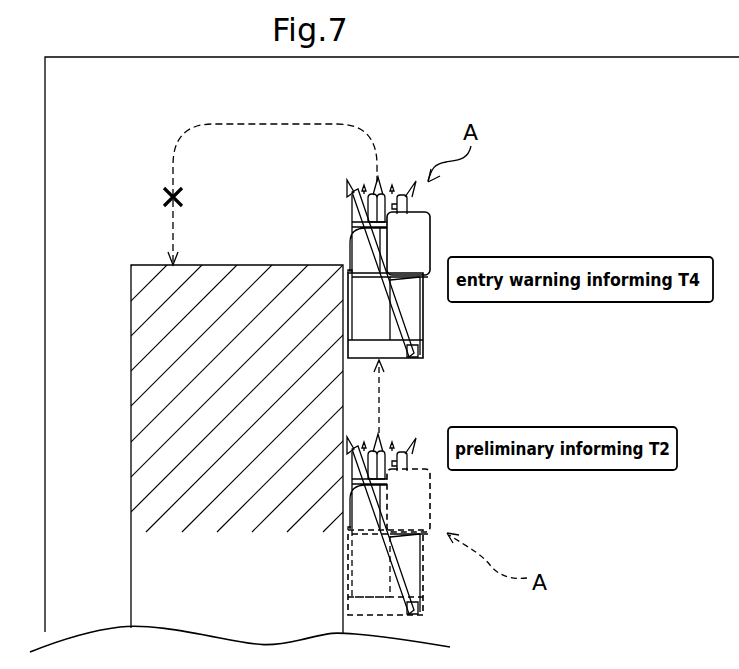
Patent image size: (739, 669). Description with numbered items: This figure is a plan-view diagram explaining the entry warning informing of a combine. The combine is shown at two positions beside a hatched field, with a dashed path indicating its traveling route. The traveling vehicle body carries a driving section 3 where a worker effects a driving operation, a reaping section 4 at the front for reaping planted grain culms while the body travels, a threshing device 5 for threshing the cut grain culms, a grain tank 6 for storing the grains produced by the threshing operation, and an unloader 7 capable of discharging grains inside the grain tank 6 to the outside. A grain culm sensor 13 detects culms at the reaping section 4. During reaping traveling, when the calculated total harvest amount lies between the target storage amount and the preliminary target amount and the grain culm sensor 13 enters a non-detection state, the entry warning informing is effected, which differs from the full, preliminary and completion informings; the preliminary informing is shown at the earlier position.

The driving section 3 is at (420, 228).
The reaping section 4 is at (381, 180).
The threshing device 5 is at (368, 335).
The grain tank 6 is at (412, 305).
The unloader 7 is at (403, 327).
The grain culm sensor 13 is at (402, 203).